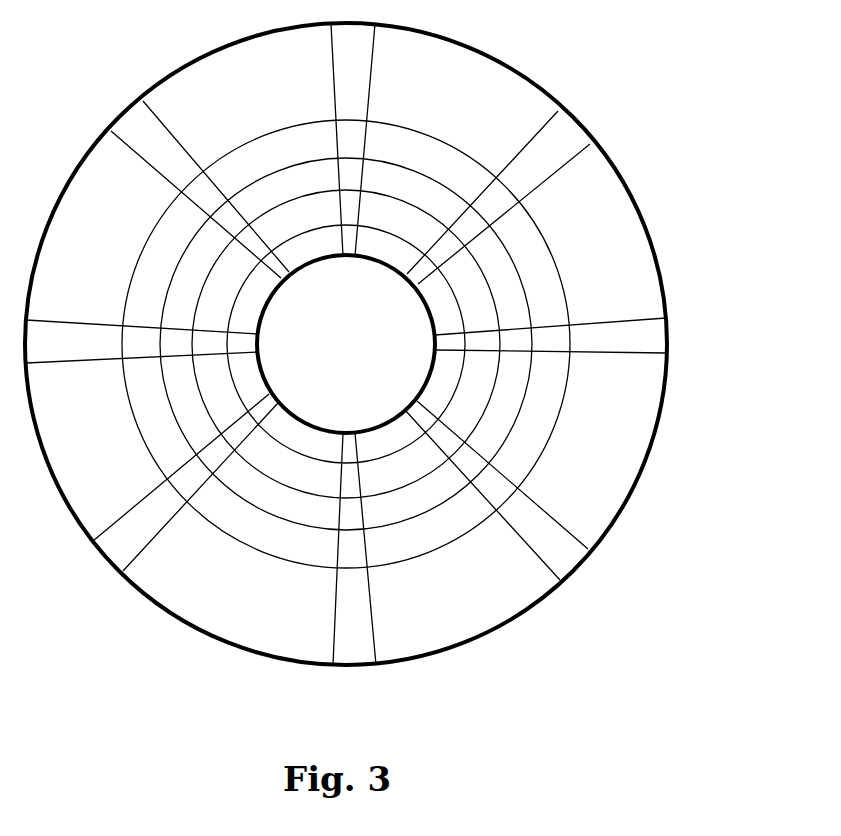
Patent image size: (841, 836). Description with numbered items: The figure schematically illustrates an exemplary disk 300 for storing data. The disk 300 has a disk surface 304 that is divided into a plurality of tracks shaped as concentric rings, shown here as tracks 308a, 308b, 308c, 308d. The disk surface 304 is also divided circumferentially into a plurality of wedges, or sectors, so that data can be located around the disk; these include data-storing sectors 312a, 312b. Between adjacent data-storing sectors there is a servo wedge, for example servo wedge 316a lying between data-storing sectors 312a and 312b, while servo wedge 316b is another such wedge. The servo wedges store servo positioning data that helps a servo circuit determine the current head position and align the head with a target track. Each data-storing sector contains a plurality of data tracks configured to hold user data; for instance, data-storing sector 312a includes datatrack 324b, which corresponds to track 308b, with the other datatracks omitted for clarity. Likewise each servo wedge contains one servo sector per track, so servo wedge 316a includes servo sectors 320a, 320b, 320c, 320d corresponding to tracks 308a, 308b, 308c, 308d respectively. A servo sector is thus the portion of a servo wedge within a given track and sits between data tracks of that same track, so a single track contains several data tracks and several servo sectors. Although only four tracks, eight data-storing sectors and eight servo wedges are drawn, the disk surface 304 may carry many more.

The disk 300 is at (419, 353).
The disk surface 304 is at (458, 72).
The track 308a is at (248, 302).
The track 308b is at (366, 206).
The track 308c is at (494, 262).
The track 308d is at (391, 136).
The data-storing sector 312a is at (568, 604).
The data-storing sector 312b is at (686, 368).
The servo wedge 316a is at (557, 550).
The servo wedge 316b is at (638, 332).
The servo sector 320a is at (419, 412).
The servo sector 320b is at (448, 431).
The servo sector 320c is at (462, 469).
The servo sector 320d is at (496, 480).
The datatrack 324b is at (380, 472).